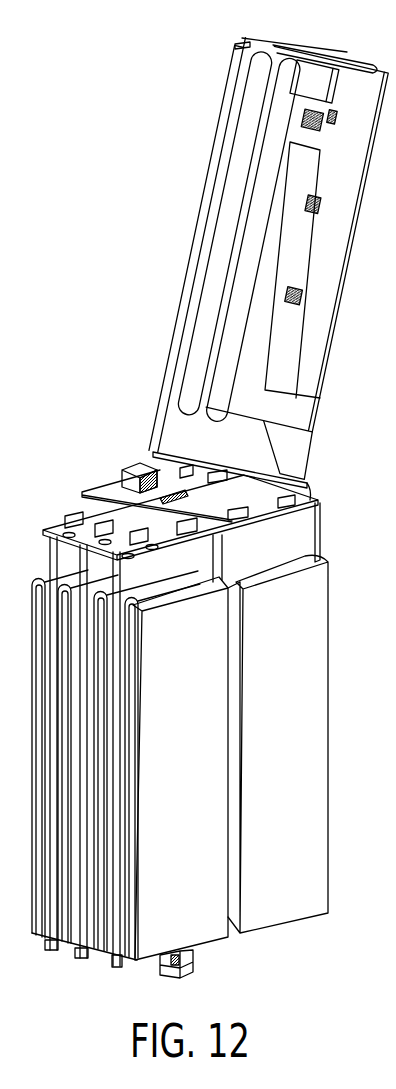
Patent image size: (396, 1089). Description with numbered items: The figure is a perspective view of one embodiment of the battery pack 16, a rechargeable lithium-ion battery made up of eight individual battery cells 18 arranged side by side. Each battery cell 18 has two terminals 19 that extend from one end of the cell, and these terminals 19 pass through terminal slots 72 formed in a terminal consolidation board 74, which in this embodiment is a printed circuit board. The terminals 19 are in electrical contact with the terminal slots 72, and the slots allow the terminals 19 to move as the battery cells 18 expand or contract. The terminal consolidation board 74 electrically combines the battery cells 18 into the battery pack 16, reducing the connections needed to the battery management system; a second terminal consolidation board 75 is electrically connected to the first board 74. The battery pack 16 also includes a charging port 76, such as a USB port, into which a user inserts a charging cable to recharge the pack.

The battery pack 16 is at (226, 268).
The battery cell 18 is at (297, 413).
The terminal 19 is at (108, 528).
The terminal slot 72 is at (140, 540).
The terminal consolidation board 74 is at (55, 528).
The terminal consolidation board 75 is at (305, 470).
The charging port 76 is at (193, 970).